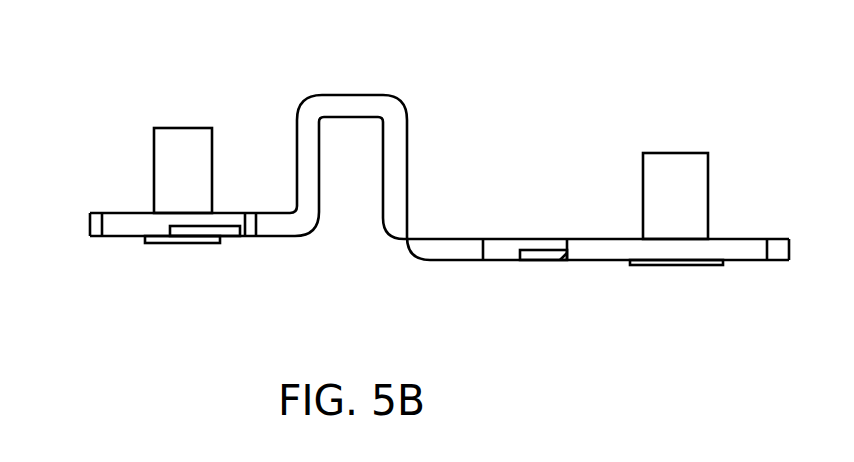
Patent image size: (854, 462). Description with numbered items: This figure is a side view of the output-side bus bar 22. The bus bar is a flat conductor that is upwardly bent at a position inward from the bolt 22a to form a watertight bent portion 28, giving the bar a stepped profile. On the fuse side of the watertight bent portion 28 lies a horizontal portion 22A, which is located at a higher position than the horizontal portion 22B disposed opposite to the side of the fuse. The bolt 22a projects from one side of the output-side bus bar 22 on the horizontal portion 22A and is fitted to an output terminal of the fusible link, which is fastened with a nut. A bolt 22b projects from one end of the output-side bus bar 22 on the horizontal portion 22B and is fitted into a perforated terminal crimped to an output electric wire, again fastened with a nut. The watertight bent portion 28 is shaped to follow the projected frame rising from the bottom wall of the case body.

The output-side bus bar 22 is at (109, 201).
The horizontal portion 22A is at (280, 237).
The horizontal portion 22B is at (593, 260).
The watertight bent portion 28 is at (350, 100).
The bolt 22a is at (175, 128).
The bolt 22b is at (671, 160).